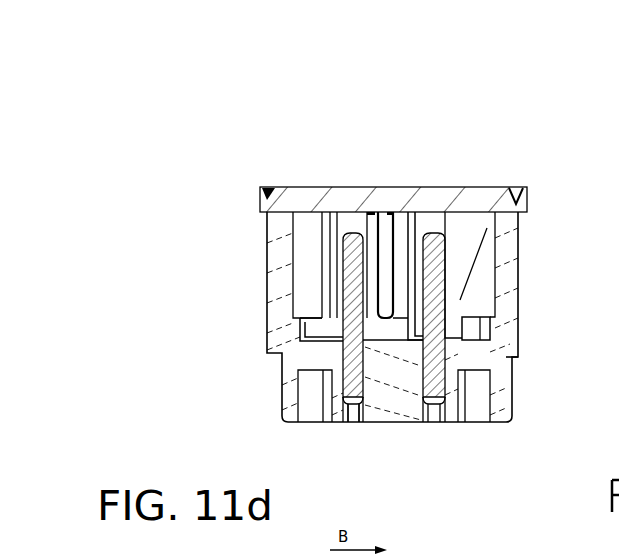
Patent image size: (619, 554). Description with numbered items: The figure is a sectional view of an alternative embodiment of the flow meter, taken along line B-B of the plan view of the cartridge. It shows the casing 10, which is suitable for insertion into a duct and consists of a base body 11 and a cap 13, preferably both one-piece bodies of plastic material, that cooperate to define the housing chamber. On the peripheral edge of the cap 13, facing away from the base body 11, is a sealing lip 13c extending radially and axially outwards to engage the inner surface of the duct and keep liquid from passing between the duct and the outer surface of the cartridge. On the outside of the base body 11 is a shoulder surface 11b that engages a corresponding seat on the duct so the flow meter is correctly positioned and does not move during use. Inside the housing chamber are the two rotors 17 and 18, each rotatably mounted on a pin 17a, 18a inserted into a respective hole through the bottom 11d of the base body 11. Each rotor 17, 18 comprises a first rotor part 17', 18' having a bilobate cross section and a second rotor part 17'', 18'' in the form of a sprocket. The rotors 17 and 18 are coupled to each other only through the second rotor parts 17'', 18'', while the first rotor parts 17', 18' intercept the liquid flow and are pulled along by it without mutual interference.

The casing 10 is at (236, 332).
The base body 11 is at (530, 307).
The shoulder surface 11b is at (514, 359).
The bottom 11d is at (394, 382).
The cap 13 is at (328, 176).
The sealing lip 13c is at (529, 184).
The rotor 17 is at (251, 260).
The first rotor part 17' is at (266, 327).
The second rotor part 17'' is at (263, 356).
The pin 17a is at (350, 418).
The rotor 18 is at (502, 232).
The first rotor part 18' is at (520, 313).
The second rotor part 18'' is at (535, 341).
The pin 18a is at (434, 418).